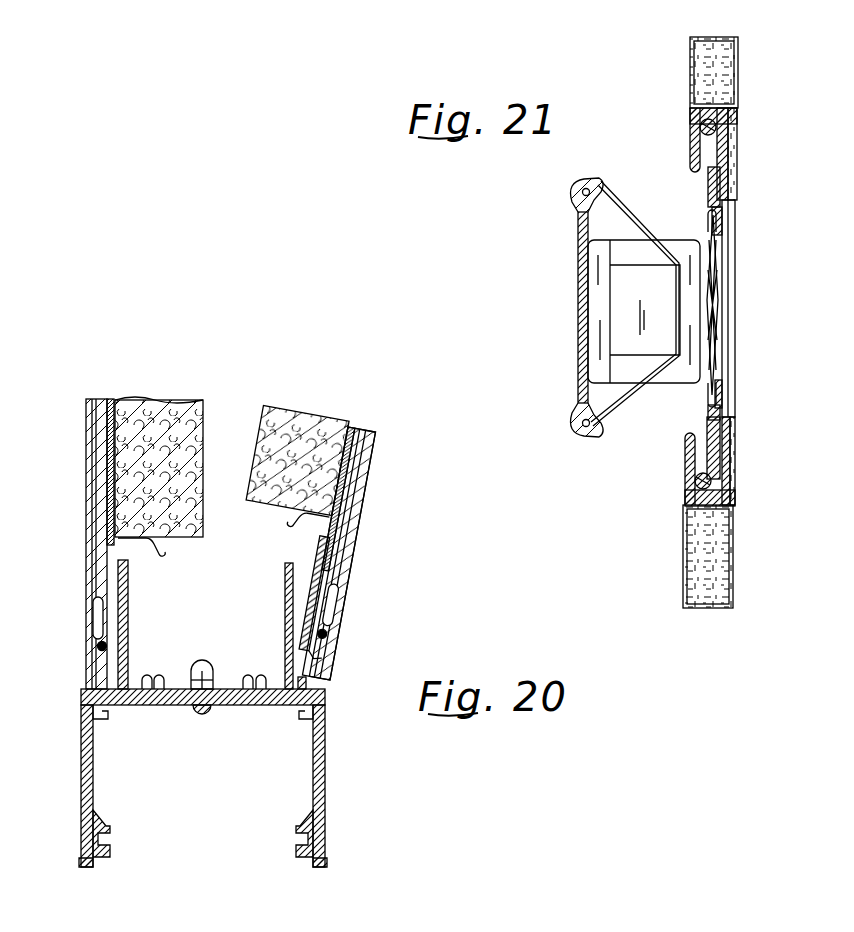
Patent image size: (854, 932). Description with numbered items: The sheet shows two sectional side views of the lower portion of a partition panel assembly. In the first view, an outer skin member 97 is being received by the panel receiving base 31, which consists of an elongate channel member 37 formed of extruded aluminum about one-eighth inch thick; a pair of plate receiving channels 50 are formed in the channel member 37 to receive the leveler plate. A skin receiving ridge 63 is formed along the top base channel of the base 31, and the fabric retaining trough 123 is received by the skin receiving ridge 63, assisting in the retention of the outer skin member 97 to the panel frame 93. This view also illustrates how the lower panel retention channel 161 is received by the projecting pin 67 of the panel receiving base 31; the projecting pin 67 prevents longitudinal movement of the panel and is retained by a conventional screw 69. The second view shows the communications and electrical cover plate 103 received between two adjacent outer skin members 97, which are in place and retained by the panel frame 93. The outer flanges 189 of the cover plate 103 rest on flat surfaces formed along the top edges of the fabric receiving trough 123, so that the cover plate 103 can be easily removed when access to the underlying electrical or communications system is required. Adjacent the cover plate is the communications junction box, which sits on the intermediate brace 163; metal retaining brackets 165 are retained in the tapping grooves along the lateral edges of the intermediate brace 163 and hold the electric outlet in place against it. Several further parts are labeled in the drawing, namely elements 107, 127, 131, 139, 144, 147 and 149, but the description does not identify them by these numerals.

In FIG. 20, the panel receiving base 31 is at (325, 762).
In FIG. 20, the elongate channel member 37 is at (81, 792).
In FIG. 20, the plate receiving channels 50 is at (110, 838).
In FIG. 20, the skin receiving ridge 63 is at (306, 686).
In FIG. 20, the projecting pin 67 is at (204, 669).
In FIG. 20, the screw 69 is at (202, 716).
In FIG. 20, the panel frame 93 is at (128, 622).
In FIG. 20, the outer skin member 97 is at (376, 480).
In FIG. 21, the outer skin member 97 is at (744, 56).
In FIG. 21, the communications and electrical cover plate 103 is at (735, 390).
In FIG. 21, the spring 107 is at (722, 307).
In FIG. 20, the fabric retaining trough 123 is at (100, 672).
In FIG. 21, the fabric retaining trough 123 is at (733, 160).
In FIG. 20, the insulation 127 is at (187, 403).
In FIG. 20, the panel skin 131 is at (105, 548).
In FIG. 20, the facing strip 139 is at (111, 399).
In FIG. 20, the panel core 144 is at (95, 495).
In FIG. 21, the panel core 144 is at (740, 92).
In FIG. 20, the bolt 147 is at (98, 644).
In FIG. 21, the bolt 147 is at (696, 487).
In FIG. 20, the clip 149 is at (150, 547).
In FIG. 20, the lower panel tension channel 161 is at (285, 598).
In FIG. 20, the intermediate brace 163 is at (92, 698).
In FIG. 21, the intermediate brace 163 is at (578, 300).
In FIG. 21, the metal retaining brackets 165 is at (616, 196).
In FIG. 21, the outer flanges 189 is at (708, 178).